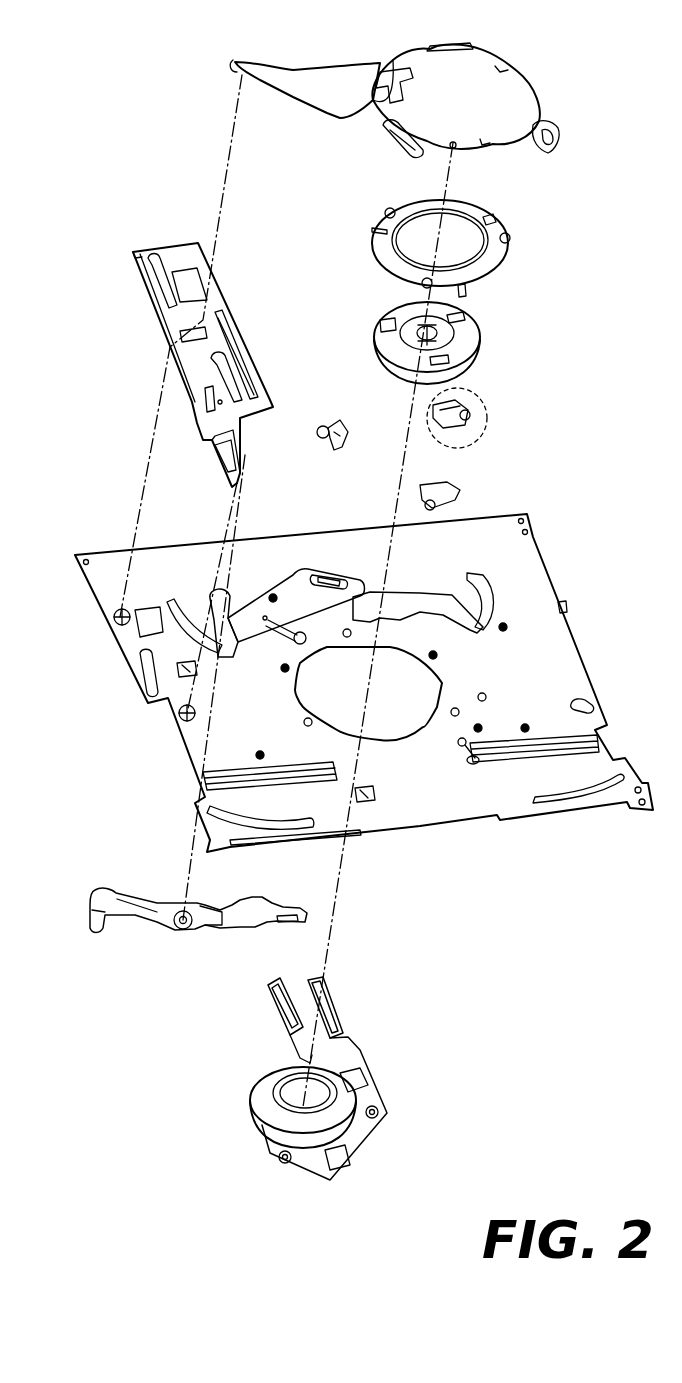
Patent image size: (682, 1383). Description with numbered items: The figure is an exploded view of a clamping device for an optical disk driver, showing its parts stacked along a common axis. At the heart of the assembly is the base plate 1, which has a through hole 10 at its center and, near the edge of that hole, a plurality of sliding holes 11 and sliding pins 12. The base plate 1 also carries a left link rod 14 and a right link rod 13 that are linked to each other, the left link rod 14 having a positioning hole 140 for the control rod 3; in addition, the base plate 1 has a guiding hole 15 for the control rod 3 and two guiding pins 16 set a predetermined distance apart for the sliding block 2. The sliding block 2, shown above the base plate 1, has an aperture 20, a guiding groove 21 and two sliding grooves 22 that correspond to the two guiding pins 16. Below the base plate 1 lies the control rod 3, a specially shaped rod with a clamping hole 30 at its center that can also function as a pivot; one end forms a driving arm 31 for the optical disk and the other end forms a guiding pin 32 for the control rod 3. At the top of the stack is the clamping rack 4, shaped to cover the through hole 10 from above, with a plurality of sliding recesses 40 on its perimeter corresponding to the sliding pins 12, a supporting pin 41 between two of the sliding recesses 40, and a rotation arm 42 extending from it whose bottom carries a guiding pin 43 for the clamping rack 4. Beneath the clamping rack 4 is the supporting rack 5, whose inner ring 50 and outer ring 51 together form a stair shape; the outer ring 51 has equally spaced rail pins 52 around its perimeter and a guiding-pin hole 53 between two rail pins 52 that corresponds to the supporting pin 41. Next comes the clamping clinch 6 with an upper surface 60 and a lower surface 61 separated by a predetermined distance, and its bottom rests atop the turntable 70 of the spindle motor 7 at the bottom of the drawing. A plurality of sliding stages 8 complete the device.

The base plate 1 is at (361, 679).
The sliding block 2 is at (203, 317).
The control rod 3 is at (246, 921).
The clamping rack 4 is at (490, 75).
The supporting rack 5 is at (516, 238).
The clamping clinch 6 is at (476, 343).
The spindle motor 7 is at (287, 1078).
The sliding stage 8 is at (338, 420).
The through hole 10 is at (400, 707).
The sliding hole 11 is at (440, 655).
The sliding pin 12 is at (462, 712).
The right link rod 13 is at (418, 600).
The left link rod 14 is at (293, 573).
The guiding hole 15 is at (140, 615).
The guiding pin 16 is at (118, 617).
The aperture 20 is at (207, 280).
The guiding groove 21 is at (207, 332).
The sliding groove 22 is at (170, 305).
The clamping hole 30 is at (183, 931).
The driving arm 31 is at (308, 912).
The guiding pin 32 is at (95, 931).
The sliding recess 40 is at (553, 133).
The supporting pin 41 is at (455, 147).
The rotation arm 42 is at (330, 100).
The guiding pin 43 is at (238, 72).
The inner ring 50 is at (488, 236).
The outer ring 51 is at (498, 265).
The rail pin 52 is at (490, 218).
The guiding-pin hole 53 is at (512, 238).
The upper surface 60 is at (468, 332).
The lower surface 61 is at (470, 372).
The turntable 70 is at (267, 1085).
The positioning hole 140 is at (253, 595).